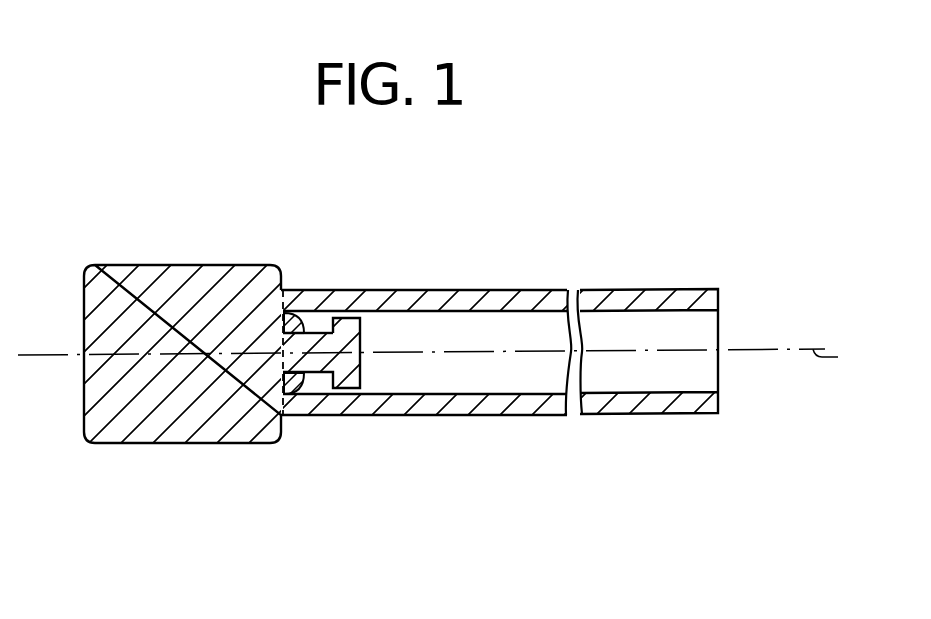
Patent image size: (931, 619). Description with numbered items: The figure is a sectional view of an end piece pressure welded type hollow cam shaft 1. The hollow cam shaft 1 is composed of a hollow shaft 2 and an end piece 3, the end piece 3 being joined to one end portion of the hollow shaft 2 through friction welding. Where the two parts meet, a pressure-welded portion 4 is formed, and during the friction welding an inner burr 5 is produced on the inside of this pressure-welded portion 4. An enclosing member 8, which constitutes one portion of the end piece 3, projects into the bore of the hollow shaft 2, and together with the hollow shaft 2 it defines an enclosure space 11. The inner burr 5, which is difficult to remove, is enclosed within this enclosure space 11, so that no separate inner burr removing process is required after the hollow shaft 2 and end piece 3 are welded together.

The hollow cam shaft 1 is at (327, 493).
The hollow shaft 2 is at (501, 300).
The end piece 3 is at (181, 275).
The pressure-welded portion 4 is at (280, 307).
The inner burr 5 is at (311, 314).
The enclosing member 8 is at (334, 363).
The enclosure space 11 is at (327, 323).